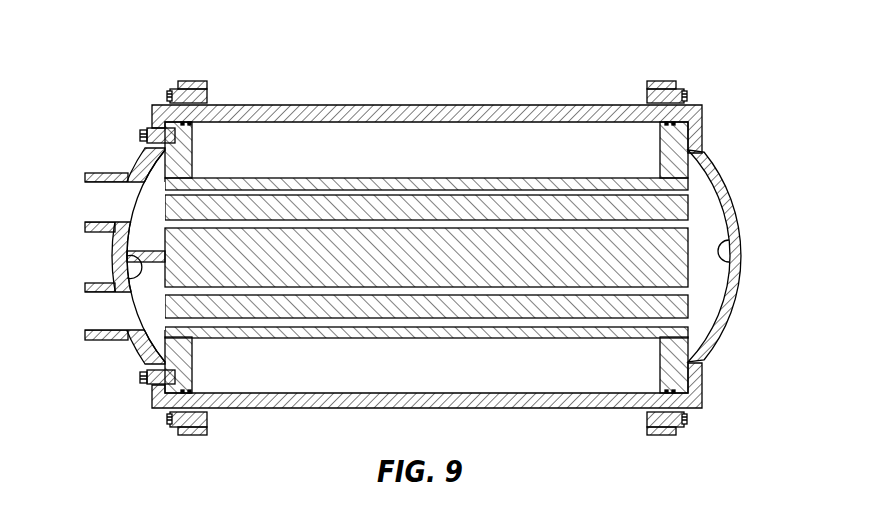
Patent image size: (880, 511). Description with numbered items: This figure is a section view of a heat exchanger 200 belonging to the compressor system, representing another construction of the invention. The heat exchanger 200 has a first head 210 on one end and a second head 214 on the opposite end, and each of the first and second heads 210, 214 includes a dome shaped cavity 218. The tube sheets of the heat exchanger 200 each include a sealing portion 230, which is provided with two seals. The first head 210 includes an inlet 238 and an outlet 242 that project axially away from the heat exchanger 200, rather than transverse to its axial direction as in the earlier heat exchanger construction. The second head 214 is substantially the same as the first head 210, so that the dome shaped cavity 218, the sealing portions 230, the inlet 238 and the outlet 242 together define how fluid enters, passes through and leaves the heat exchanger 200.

The heat exchanger 200 is at (588, 62).
The first head 210 is at (105, 214).
The second head 214 is at (757, 176).
The dome shaped cavity 218 is at (138, 253).
The sealing portion 230 is at (170, 400).
The inlet 238 is at (100, 174).
The outlet 242 is at (100, 341).